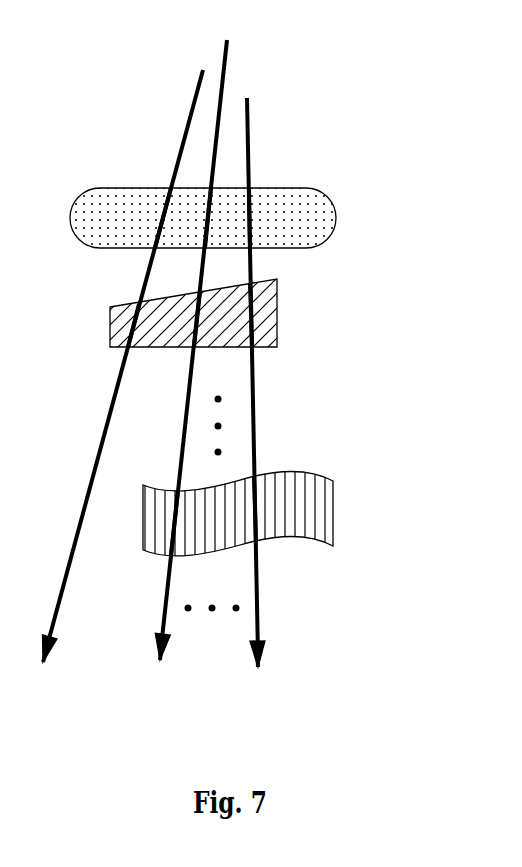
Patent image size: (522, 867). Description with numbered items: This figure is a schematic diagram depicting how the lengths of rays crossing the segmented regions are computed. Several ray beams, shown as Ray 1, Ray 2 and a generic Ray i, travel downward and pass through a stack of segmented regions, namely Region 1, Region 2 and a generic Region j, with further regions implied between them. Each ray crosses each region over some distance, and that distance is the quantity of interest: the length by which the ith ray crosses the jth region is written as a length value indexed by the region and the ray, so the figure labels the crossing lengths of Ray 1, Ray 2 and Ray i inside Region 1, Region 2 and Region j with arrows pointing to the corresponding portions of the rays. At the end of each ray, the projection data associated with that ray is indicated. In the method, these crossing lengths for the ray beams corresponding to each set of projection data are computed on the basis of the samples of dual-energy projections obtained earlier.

The first ray Ray 1 is at (123, 360).
The second ray Ray 2 is at (219, 337).
The ith ray Ray i is at (276, 376).
The first segmented region Region 1 is at (261, 218).
The second segmented region Region 2 is at (251, 321).
The jth segmented region Region j is at (287, 513).